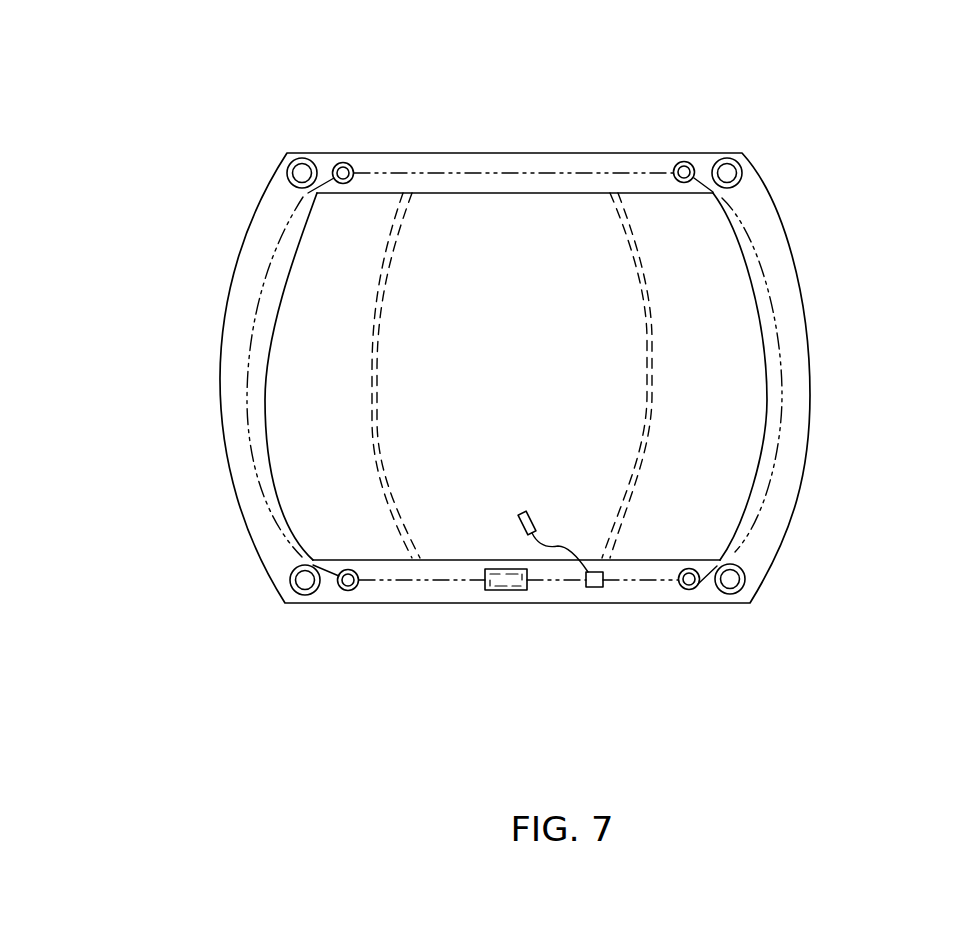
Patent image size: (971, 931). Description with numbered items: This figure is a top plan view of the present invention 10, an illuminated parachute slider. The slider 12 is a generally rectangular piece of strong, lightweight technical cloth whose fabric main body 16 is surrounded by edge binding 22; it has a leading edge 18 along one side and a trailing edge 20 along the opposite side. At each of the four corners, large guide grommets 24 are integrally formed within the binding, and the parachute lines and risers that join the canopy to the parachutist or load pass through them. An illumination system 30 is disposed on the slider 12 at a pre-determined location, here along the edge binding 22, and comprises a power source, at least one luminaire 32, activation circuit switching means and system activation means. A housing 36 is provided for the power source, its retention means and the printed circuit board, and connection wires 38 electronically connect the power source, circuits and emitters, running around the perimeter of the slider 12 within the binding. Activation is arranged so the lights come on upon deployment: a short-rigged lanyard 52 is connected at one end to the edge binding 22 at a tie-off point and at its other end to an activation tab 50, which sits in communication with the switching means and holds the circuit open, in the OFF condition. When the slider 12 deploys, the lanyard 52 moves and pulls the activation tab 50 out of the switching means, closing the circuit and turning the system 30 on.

The present invention 10 is at (145, 326).
The slider 12 is at (237, 270).
The main body 16 is at (488, 217).
The leading edge 18 is at (418, 607).
The trailing edge 20 is at (410, 153).
The edge binding 22 is at (241, 376).
The guide grommets 24 is at (743, 173).
The illumination system 30 is at (627, 587).
The luminaire 32 is at (340, 162).
The housing 36 is at (515, 590).
The connection wires 38 is at (428, 173).
The activation tab 50 is at (535, 522).
The lanyard 52 is at (570, 550).